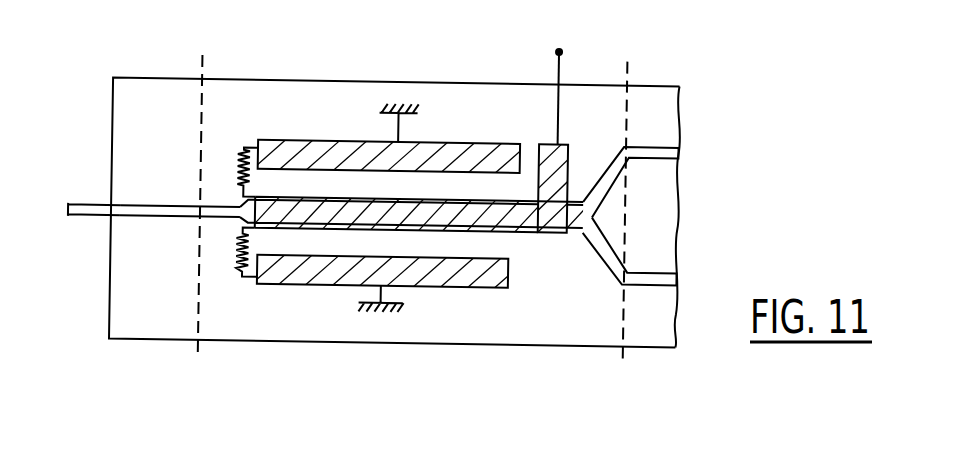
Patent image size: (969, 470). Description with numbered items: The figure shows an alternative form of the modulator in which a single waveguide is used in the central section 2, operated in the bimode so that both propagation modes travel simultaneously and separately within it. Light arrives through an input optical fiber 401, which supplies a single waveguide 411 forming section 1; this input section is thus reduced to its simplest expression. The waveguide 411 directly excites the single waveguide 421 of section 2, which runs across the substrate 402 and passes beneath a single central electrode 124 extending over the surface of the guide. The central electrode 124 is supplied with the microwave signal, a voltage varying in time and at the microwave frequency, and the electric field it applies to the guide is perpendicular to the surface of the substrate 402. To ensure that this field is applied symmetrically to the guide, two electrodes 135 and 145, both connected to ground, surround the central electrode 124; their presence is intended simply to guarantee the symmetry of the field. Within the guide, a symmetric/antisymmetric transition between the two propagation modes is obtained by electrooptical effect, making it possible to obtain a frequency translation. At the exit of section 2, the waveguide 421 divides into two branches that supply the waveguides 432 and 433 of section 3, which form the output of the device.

The section 1 is at (162, 359).
The section 2 is at (394, 362).
The section 3 is at (662, 361).
The central electrode 124 is at (568, 164).
The electrode 135 is at (284, 164).
The electrode 145 is at (276, 286).
The input optical fiber 401 is at (79, 210).
The substrate 402 is at (554, 330).
The single waveguide 411 is at (154, 209).
The single waveguide 421 is at (221, 218).
The waveguide 432 is at (642, 144).
The waveguide 433 is at (644, 269).